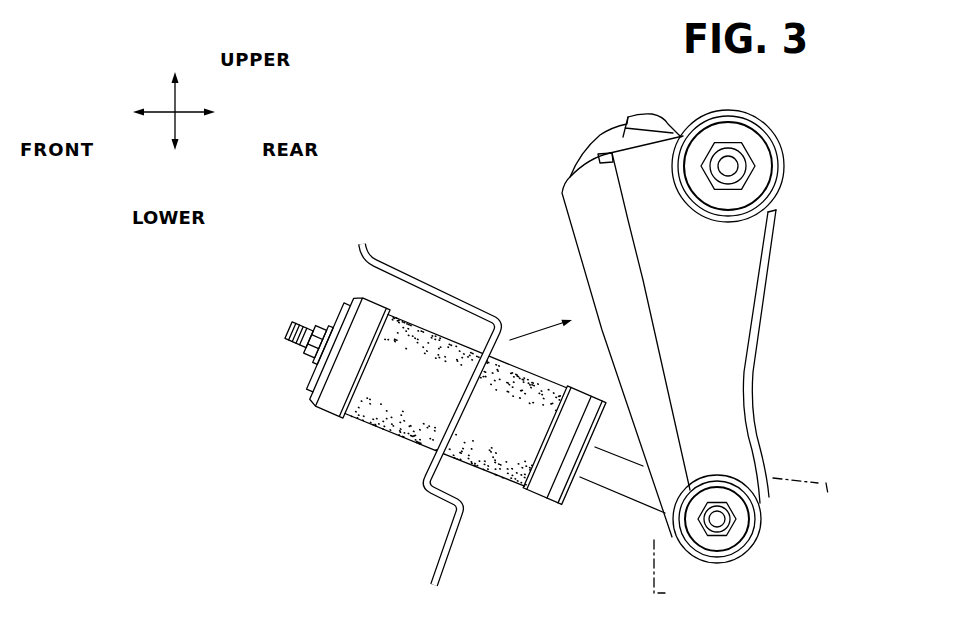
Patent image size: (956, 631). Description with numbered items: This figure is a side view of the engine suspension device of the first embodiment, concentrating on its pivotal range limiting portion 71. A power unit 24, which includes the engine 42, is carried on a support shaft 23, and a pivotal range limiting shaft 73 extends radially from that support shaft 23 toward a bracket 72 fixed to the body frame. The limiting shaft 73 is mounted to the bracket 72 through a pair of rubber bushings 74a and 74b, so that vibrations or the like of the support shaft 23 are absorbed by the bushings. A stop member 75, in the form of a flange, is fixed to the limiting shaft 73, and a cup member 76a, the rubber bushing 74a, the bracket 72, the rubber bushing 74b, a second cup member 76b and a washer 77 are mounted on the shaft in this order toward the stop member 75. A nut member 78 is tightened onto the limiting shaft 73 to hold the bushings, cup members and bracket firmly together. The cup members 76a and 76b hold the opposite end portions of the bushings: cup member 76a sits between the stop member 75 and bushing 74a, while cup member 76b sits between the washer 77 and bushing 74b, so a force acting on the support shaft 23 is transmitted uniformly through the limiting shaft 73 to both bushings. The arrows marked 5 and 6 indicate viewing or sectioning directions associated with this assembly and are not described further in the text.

The swing arm 5 is at (822, 318).
The cross-section direction 6 is at (541, 308).
The support shaft 23 is at (720, 522).
The power unit 24 is at (818, 483).
The engine 42 is at (770, 470).
The pivotal range limiting portion 71 is at (442, 339).
The bracket 72 is at (405, 278).
The pivotal range limiting shaft 73 is at (613, 477).
The rubber bushing 74a is at (506, 421).
The rubber bushing 74b is at (416, 385).
The stop member 75 is at (580, 452).
The cup member 76a is at (564, 445).
The cup member 76b is at (349, 356).
The washer 77 is at (326, 346).
The nut member 78 is at (305, 336).